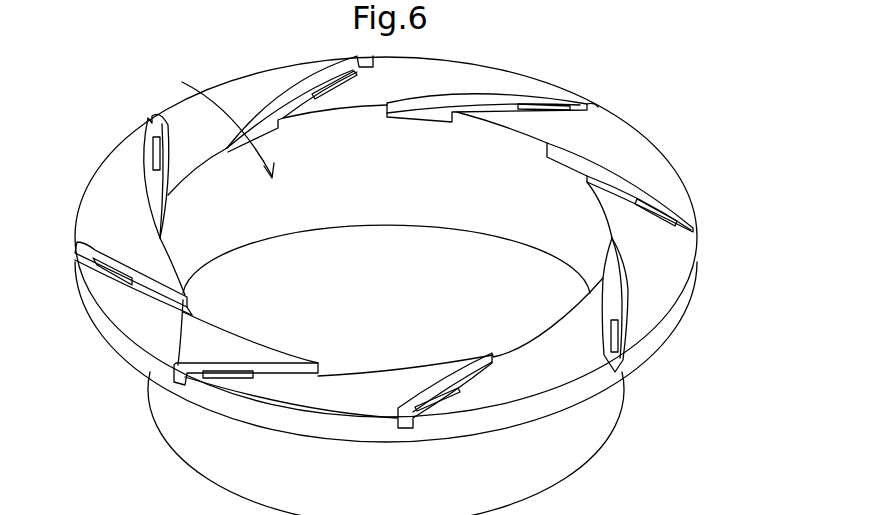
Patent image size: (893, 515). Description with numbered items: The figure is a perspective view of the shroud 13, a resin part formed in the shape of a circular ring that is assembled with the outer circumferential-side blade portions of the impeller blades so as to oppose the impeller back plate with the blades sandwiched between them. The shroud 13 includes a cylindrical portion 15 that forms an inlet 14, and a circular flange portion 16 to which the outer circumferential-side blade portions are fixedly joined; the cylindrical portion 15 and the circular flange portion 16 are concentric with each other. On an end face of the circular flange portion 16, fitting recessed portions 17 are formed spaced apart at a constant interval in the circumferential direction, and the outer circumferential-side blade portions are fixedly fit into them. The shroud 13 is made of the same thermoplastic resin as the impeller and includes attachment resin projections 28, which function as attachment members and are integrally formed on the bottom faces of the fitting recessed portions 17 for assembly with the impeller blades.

The shroud 13 is at (638, 106).
The inlet 14 is at (213, 119).
The cylindrical portion 15 is at (533, 457).
The circular flange portion 16 is at (665, 277).
The fitting recessed portions 17 is at (287, 110).
The attachment resin projections 28 is at (155, 145).